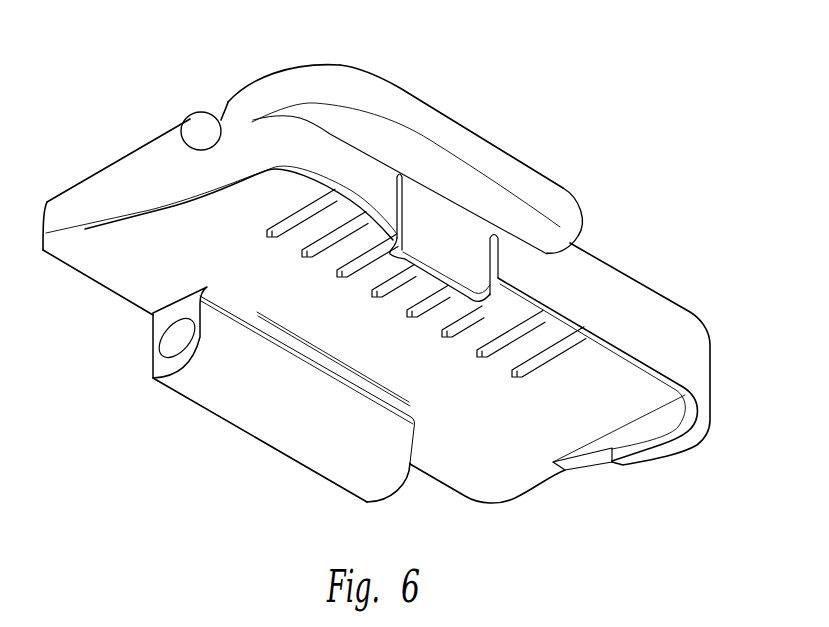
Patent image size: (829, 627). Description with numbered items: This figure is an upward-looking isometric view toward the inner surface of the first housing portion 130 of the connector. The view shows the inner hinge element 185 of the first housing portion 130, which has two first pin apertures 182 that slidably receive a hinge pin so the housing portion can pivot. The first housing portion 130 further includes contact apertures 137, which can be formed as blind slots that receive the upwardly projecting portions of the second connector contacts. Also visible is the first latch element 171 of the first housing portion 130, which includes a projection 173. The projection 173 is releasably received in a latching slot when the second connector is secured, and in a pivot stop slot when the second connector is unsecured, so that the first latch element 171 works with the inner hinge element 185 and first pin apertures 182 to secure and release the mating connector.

The first housing portion 130 is at (135, 127).
The first latch element 171 is at (445, 240).
The projection 173 is at (397, 250).
The contact apertures 137 is at (568, 356).
The first pin apertures 182 is at (168, 340).
The inner hinge element 185 is at (270, 425).